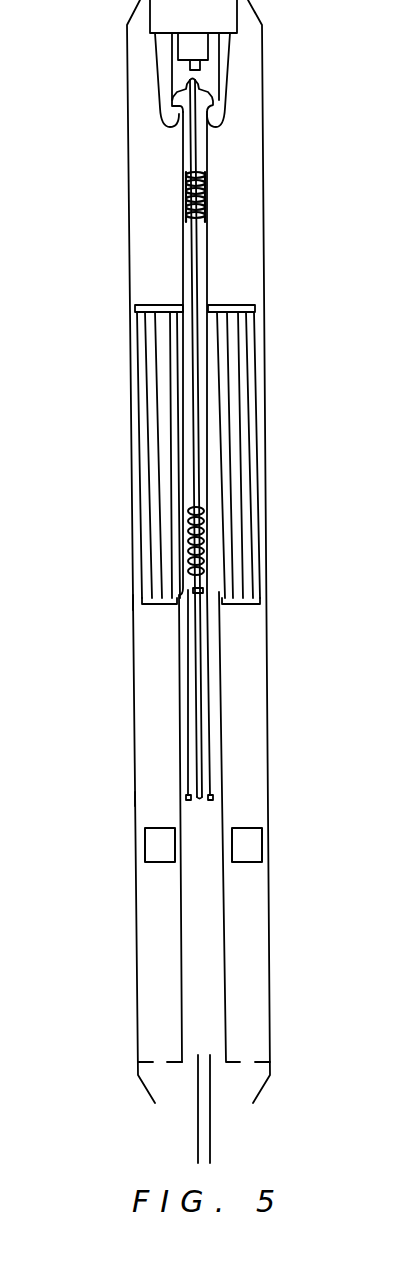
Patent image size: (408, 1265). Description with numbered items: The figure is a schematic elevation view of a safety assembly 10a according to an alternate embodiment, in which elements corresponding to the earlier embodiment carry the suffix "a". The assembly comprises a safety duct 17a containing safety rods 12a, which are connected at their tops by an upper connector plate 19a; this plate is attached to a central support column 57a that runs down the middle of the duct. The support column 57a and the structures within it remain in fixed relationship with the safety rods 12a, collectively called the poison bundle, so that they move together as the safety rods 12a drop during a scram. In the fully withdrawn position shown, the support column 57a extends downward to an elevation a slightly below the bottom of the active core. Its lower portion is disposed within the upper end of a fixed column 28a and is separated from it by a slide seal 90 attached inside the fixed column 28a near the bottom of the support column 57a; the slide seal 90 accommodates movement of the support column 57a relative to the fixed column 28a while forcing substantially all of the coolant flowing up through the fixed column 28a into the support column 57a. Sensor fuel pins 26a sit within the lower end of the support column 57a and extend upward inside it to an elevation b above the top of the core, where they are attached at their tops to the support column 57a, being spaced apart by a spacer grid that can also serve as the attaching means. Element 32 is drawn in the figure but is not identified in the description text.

The safety assembly 10a is at (266, 141).
The safety duct 17a is at (262, 205).
The central support column 57a is at (220, 277).
The upper connector plate 19a is at (256, 306).
The safety rods 12a is at (248, 375).
The fixed column 28a is at (222, 658).
The sensor fuel pins 26a is at (205, 702).
The inner sleeve 32 is at (213, 755).
The slide seal 90 is at (215, 800).
The elevation slightly below the bottom of the active core a is at (130, 798).
The elevation above the top of the core b is at (128, 602).